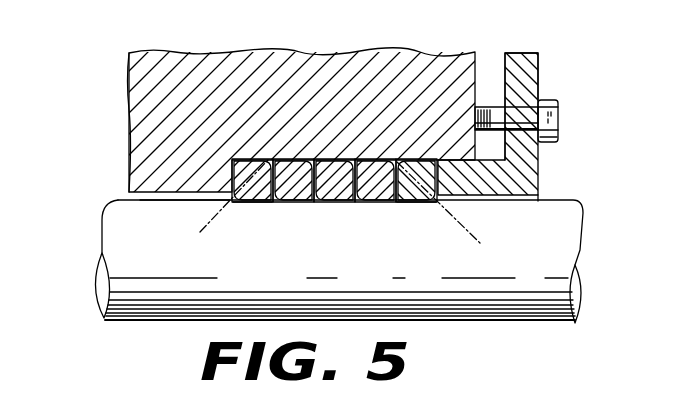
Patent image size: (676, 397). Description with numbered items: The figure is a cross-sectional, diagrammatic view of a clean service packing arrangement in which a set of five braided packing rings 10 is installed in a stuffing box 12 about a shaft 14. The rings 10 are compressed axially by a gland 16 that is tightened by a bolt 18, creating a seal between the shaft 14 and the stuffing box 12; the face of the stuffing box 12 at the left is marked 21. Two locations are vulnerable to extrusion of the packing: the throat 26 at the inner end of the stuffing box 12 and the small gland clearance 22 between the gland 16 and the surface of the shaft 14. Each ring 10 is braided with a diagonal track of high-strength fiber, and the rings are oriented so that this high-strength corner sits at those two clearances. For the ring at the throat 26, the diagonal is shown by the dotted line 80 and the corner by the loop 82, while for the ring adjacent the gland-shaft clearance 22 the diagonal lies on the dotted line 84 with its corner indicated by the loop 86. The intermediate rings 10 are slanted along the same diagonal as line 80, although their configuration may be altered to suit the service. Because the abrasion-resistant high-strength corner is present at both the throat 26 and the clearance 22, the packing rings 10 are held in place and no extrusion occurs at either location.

The stuffing box 12 is at (373, 72).
The side face of body 21 is at (128, 95).
The gland 16 is at (540, 78).
The bolt 18 is at (558, 127).
The gland clearance 22 is at (525, 198).
The packing rings 10 is at (302, 201).
The dotted line 80 is at (205, 230).
The loop 82 is at (253, 193).
The dotted line 84 is at (472, 233).
The loop 86 is at (423, 201).
The shaft 14 is at (378, 268).
The throat 26 is at (180, 201).